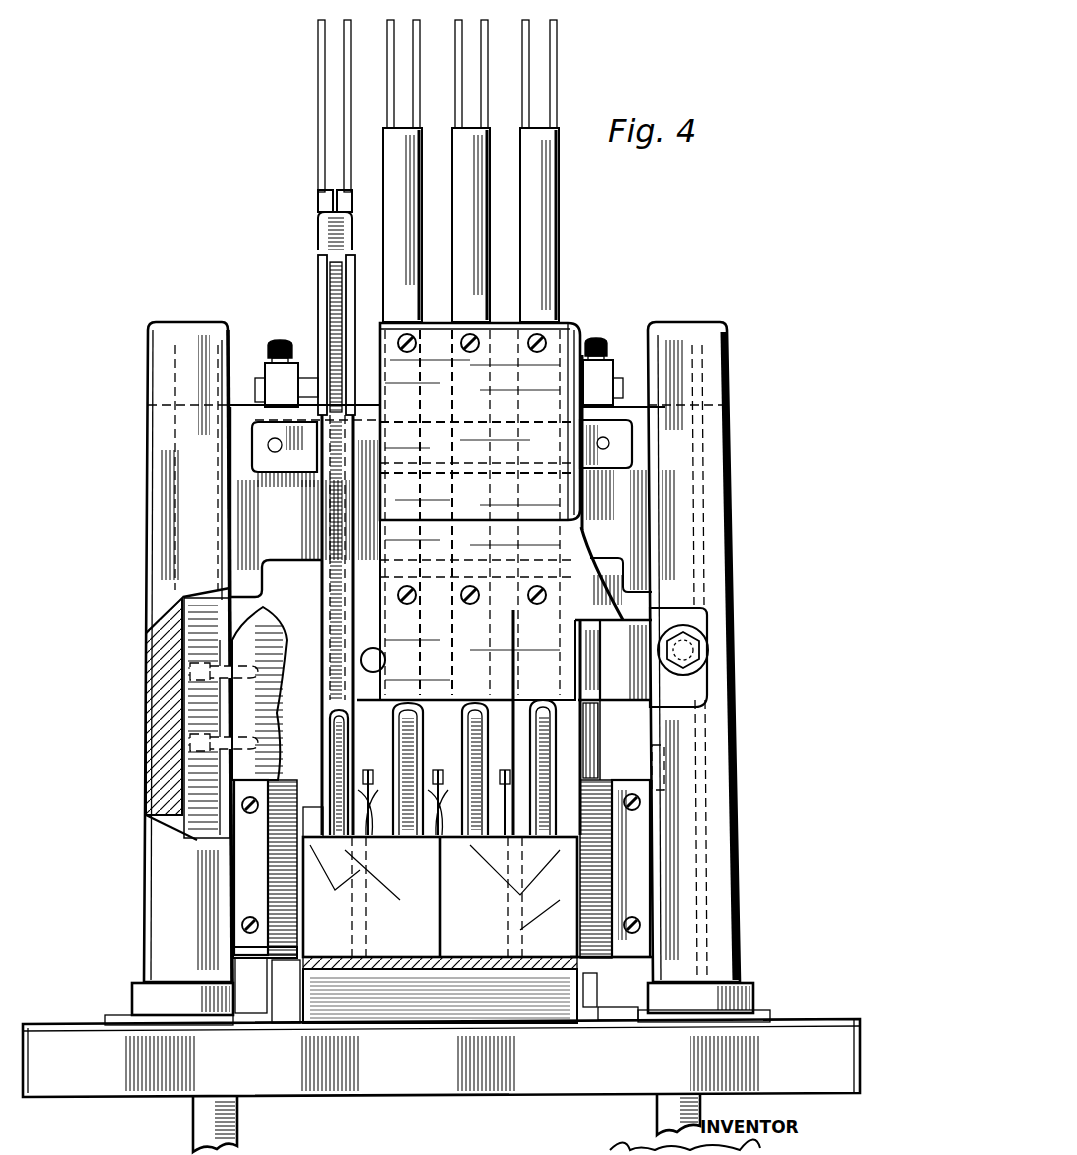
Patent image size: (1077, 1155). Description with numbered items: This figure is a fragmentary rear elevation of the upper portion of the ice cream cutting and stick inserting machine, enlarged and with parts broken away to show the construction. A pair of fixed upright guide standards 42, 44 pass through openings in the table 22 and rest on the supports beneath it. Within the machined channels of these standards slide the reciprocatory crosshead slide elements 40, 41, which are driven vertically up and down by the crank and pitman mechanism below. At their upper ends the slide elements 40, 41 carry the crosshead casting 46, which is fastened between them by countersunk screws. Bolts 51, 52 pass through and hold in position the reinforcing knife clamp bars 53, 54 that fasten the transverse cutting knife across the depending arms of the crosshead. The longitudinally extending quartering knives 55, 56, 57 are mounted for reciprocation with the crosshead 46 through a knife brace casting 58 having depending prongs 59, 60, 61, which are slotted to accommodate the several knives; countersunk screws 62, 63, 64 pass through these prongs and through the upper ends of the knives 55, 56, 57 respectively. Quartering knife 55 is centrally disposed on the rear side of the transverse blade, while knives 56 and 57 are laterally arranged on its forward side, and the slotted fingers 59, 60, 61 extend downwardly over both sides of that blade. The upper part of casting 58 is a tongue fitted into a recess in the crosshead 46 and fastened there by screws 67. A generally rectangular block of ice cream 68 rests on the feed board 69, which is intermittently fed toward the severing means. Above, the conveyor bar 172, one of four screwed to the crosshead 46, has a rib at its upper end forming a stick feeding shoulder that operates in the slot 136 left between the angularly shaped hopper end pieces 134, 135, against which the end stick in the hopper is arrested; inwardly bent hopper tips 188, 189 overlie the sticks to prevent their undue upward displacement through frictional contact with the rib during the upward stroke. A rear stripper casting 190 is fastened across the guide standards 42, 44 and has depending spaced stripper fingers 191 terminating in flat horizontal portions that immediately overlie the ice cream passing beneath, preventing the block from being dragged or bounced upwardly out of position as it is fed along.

The table 22 is at (68, 1042).
The crosshead slide element 40 is at (232, 1133).
The crosshead slide element 41 is at (658, 1110).
The guide standard 42 is at (150, 423).
The guide standard 44 is at (728, 397).
The crosshead casting 46 is at (570, 540).
The bolt 51 is at (250, 803).
The bolt 52 is at (640, 806).
The knife clamp bar 53 is at (248, 864).
The knife clamp bar 54 is at (640, 860).
The quartering knife 55 is at (442, 906).
The quartering knife 56 is at (230, 905).
The quartering knife 57 is at (508, 912).
The knife brace casting 58 is at (322, 620).
The prong 59 is at (380, 836).
The prong 60 is at (459, 897).
The prong 61 is at (501, 897).
The countersunk screw 62 is at (436, 770).
The countersunk screw 63 is at (356, 788).
The countersunk screw 64 is at (535, 762).
The screw 67 is at (361, 662).
The block of ice cream 68 is at (405, 958).
The feed board 69 is at (455, 1012).
The hopper end piece 134 is at (318, 270).
The hopper end piece 135 is at (350, 265).
The slot 136 is at (335, 302).
The conveyor bar 172 is at (475, 276).
The hopper tip 188 is at (318, 201).
The hopper tip 189 is at (346, 201).
The rear stripper casting 190 is at (632, 632).
The stripper finger 191 is at (592, 773).